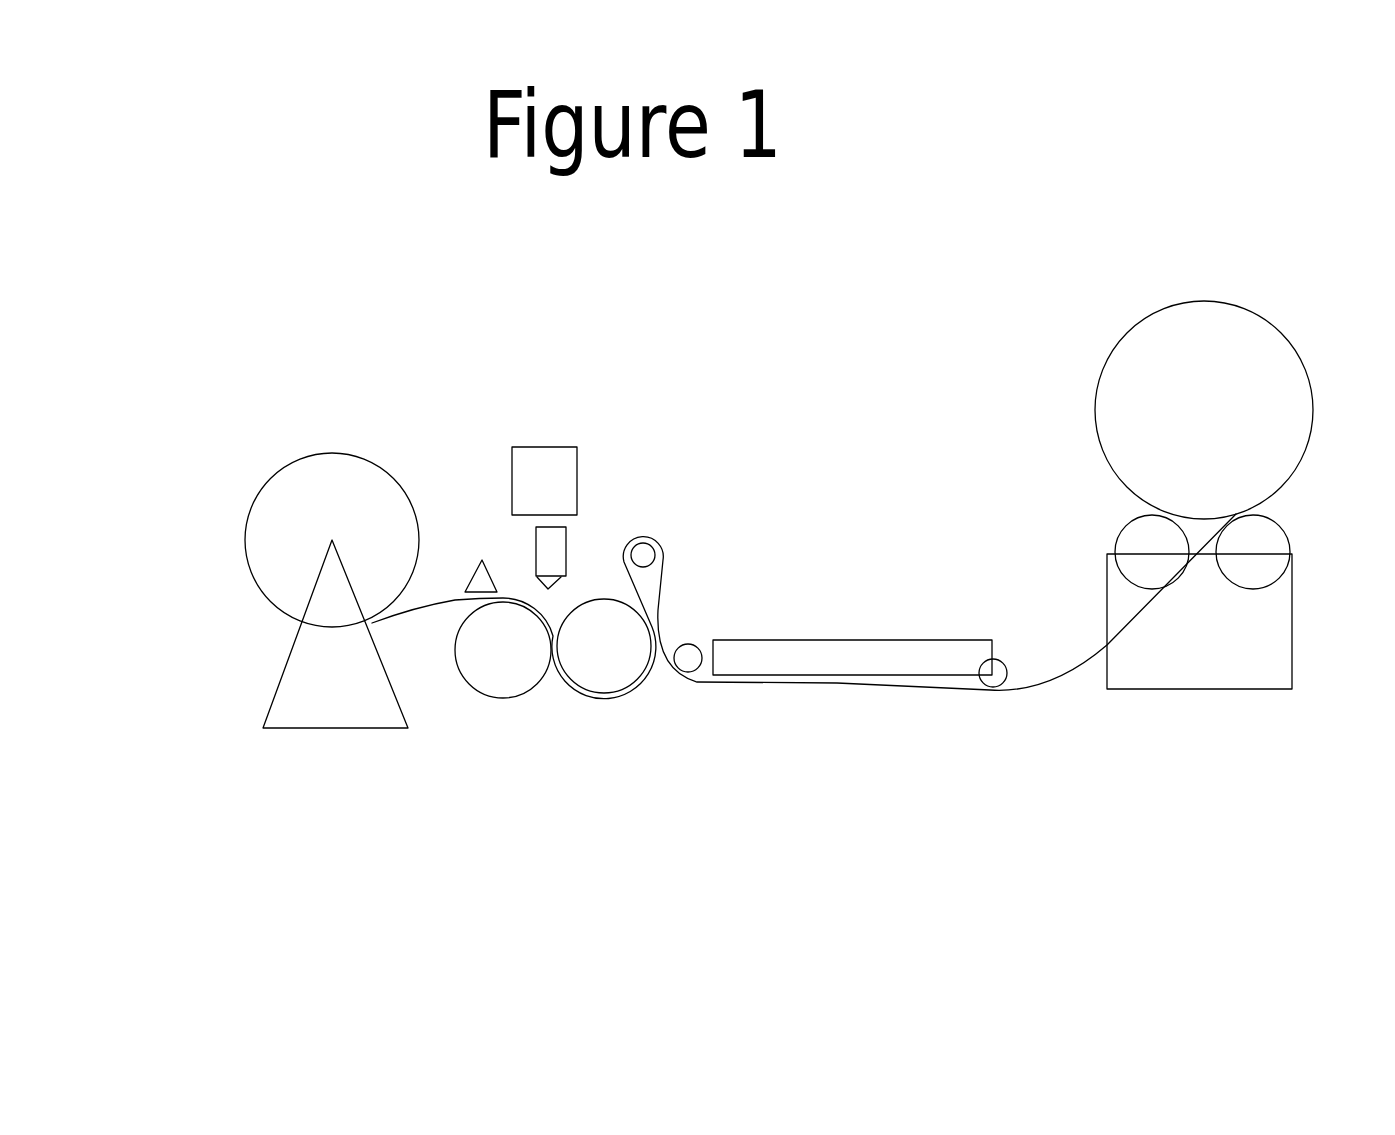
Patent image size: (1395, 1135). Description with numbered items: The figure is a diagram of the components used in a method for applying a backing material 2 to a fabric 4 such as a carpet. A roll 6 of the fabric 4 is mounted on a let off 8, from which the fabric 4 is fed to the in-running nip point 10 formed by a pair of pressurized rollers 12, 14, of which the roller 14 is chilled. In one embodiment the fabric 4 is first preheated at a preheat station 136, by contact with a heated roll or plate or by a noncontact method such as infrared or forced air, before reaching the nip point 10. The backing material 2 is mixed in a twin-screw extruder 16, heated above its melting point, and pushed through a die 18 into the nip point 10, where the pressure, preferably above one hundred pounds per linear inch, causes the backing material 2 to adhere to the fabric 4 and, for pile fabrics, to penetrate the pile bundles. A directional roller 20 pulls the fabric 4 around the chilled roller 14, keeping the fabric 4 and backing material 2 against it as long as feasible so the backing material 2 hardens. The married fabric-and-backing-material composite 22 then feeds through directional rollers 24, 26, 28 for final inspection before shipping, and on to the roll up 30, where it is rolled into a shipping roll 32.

The backing material 2 is at (547, 594).
The fabric 4 is at (439, 612).
The roll 6 is at (265, 520).
The let off 8 is at (313, 682).
The in-running nip point 10 is at (556, 620).
The roller 12 is at (517, 678).
The roller 14 is at (630, 668).
The twin-screw extruder 16 is at (550, 472).
The die 18 is at (482, 412).
The directional roller 20 is at (645, 552).
The fabric-and-backing-material composite 22 is at (663, 585).
The directional roller 24 is at (853, 610).
The directional roller 26 is at (1130, 540).
The directional roller 28 is at (1268, 529).
The roll up 30 is at (1247, 643).
The shipping roll 32 is at (1250, 306).
The preheat station 136 is at (357, 478).